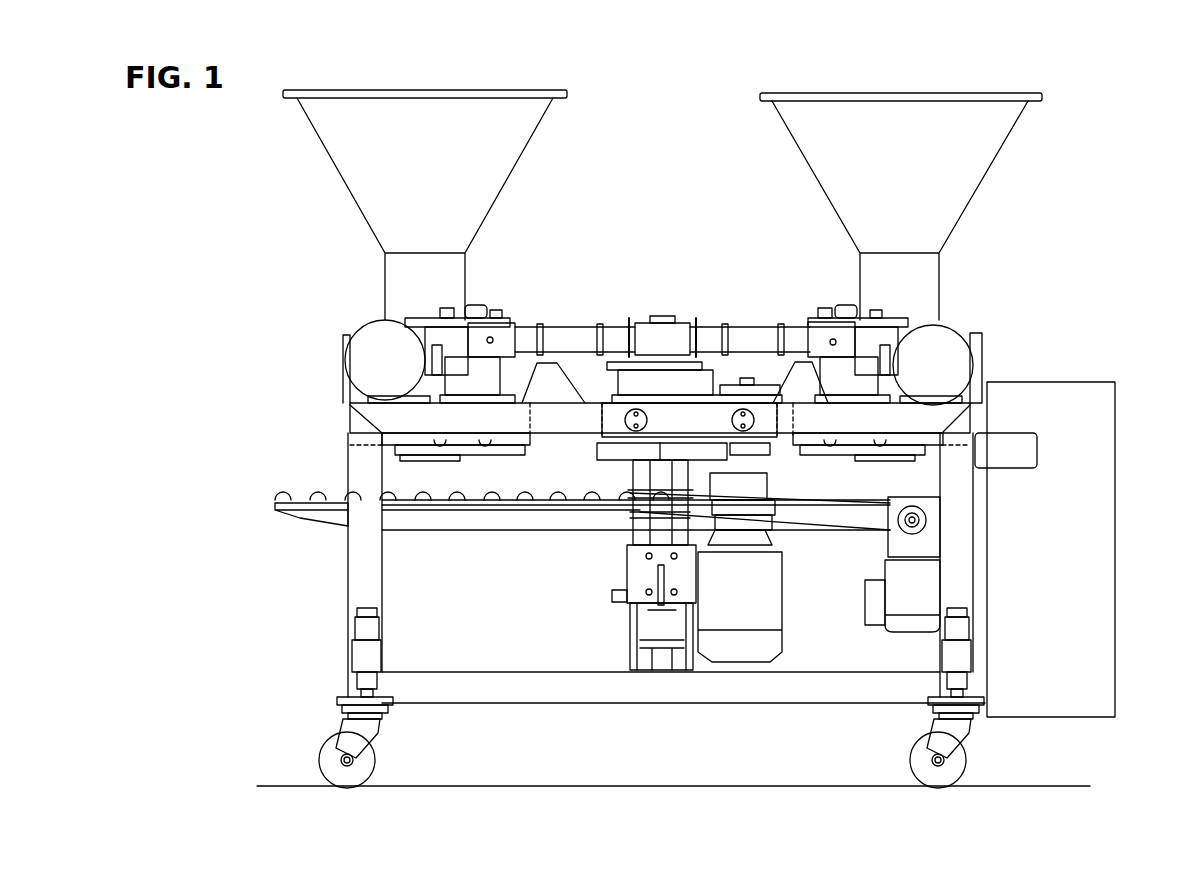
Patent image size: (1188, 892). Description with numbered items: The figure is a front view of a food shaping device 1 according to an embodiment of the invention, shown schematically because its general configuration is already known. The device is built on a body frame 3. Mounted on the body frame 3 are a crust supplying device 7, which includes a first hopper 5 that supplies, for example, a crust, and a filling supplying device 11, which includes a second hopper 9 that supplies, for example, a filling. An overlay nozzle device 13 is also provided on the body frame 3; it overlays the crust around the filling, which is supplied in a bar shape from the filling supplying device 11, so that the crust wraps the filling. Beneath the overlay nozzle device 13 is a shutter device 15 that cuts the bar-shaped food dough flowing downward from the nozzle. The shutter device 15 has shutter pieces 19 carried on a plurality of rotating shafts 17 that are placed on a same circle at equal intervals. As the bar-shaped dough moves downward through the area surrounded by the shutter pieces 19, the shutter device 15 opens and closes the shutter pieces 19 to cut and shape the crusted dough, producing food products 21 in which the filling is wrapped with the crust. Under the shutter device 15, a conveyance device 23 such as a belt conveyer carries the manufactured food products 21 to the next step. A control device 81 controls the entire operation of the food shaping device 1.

The food shaping device 1 is at (1128, 167).
The body frame 3 is at (337, 602).
The first hopper 5 is at (890, 189).
The crust supplying device 7 is at (977, 327).
The second hopper 9 is at (409, 187).
The filling supplying device 11 is at (335, 331).
The overlay nozzle device 13 is at (676, 308).
The shutter device 15 is at (570, 466).
The rotating shafts 17 is at (603, 437).
The shutter pieces 19 is at (680, 455).
The food products 21 is at (313, 495).
The conveyance device 23 is at (263, 524).
The control device 81 is at (1036, 565).